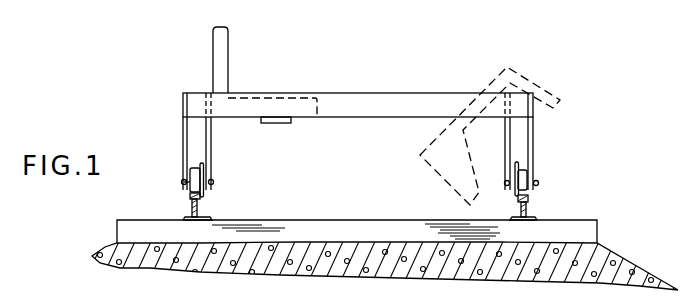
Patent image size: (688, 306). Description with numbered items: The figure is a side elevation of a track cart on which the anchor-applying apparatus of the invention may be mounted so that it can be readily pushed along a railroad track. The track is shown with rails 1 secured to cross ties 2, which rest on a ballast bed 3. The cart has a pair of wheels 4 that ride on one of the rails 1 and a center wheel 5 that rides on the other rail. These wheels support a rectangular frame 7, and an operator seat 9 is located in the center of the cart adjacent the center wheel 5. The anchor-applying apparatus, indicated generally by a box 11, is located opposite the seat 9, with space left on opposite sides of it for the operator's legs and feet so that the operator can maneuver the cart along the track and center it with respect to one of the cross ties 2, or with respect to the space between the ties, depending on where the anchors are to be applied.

The rail 1 is at (190, 208).
The cross tie 2 is at (343, 220).
The ballast bed 3 is at (641, 262).
The wheel 4 is at (527, 178).
The center wheel 5 is at (192, 170).
The rectangular frame 7 is at (338, 108).
The operator seat 9 is at (228, 63).
The anchor-applying apparatus 11 is at (537, 82).